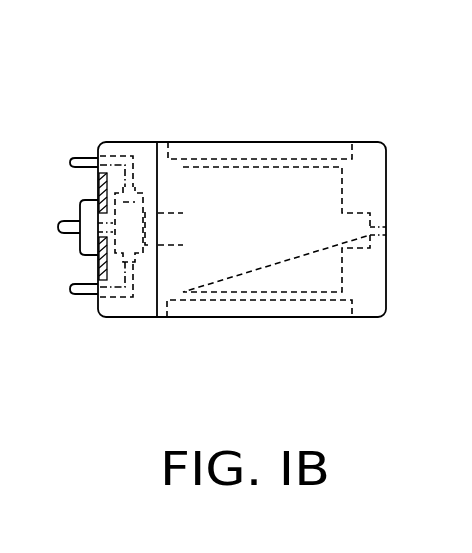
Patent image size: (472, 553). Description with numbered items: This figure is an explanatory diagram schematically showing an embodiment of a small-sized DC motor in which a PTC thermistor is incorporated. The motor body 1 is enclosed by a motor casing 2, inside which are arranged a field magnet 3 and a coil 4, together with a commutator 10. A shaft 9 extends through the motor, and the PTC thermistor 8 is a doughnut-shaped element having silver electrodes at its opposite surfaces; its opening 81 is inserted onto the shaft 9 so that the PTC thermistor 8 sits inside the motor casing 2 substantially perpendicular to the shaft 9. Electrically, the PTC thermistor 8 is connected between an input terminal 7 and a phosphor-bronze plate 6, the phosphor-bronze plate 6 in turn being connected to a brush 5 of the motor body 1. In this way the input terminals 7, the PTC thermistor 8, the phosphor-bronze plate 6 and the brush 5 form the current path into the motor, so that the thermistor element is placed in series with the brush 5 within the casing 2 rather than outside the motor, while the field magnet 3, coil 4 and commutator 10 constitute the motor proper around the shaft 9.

The motor body 1 is at (368, 142).
The motor casing 2 is at (125, 142).
The field magnet 3 is at (307, 306).
The coil 4 is at (330, 197).
The brush 5 is at (149, 318).
The phosphor-bronze plate 6 is at (125, 317).
The input terminal 7 is at (84, 158).
The PTC thermistor 8 is at (98, 280).
The opening 81 is at (103, 215).
The shaft 9 is at (65, 220).
The commutator 10 is at (135, 213).